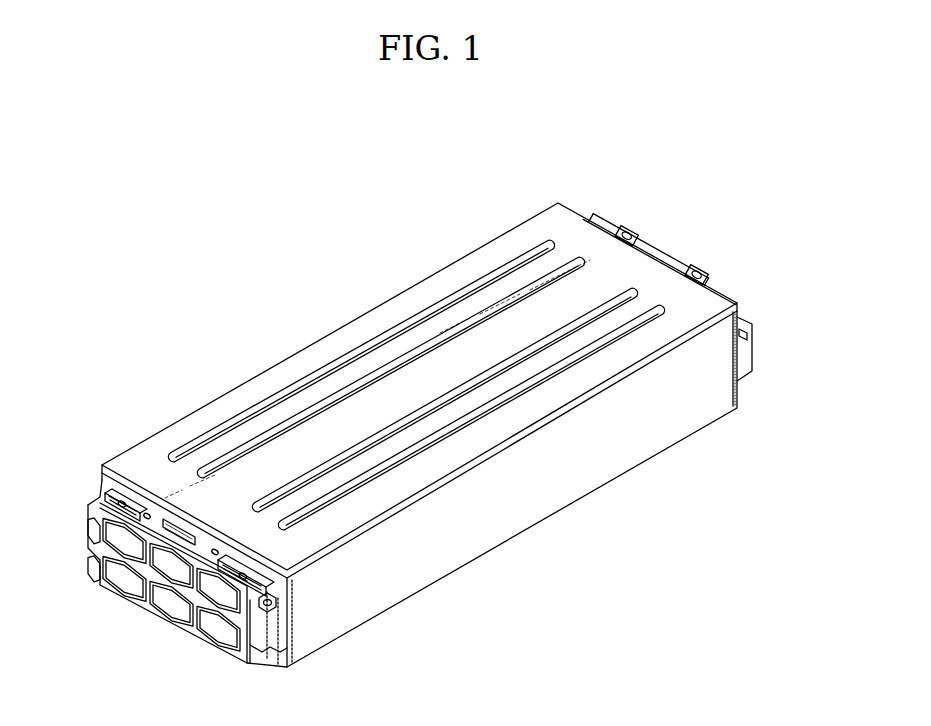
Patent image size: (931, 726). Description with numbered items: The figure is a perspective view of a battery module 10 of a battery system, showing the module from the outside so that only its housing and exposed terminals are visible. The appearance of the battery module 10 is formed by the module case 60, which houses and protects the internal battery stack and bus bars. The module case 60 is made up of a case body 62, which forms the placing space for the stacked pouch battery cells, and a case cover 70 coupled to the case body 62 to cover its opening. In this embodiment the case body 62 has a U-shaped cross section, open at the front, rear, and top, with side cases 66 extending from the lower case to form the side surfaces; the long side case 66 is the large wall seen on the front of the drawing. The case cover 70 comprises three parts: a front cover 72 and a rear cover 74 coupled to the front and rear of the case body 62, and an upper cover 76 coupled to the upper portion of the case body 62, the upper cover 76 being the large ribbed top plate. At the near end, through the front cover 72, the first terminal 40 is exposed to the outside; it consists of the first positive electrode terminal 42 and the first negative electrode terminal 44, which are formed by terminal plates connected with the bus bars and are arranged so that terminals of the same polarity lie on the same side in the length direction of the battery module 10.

The battery module 10 is at (205, 359).
The first terminal 40 is at (155, 584).
The first positive electrode terminal 42 is at (218, 583).
The first negative electrode terminal 44 is at (103, 502).
The module case 60 is at (402, 602).
The case body 62 is at (481, 556).
The side case 66 is at (547, 495).
The case cover 70 is at (465, 456).
The front cover 72 is at (236, 652).
The rear cover 74 is at (757, 350).
The upper cover 76 is at (270, 383).